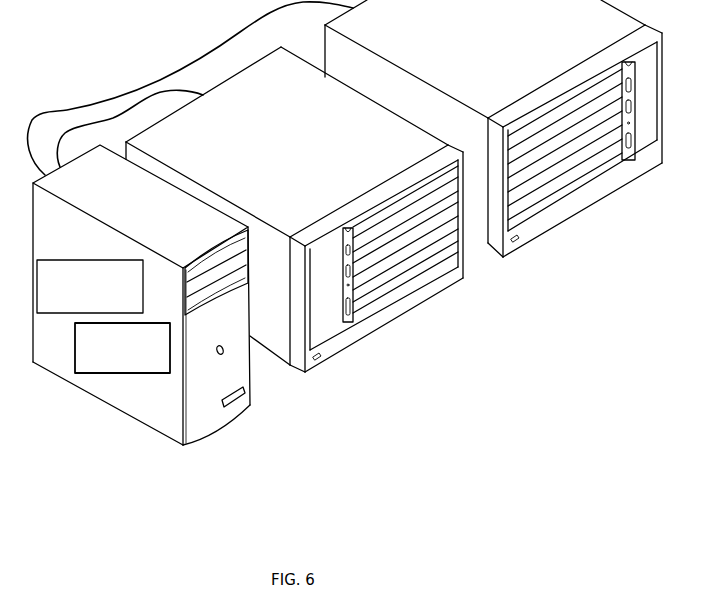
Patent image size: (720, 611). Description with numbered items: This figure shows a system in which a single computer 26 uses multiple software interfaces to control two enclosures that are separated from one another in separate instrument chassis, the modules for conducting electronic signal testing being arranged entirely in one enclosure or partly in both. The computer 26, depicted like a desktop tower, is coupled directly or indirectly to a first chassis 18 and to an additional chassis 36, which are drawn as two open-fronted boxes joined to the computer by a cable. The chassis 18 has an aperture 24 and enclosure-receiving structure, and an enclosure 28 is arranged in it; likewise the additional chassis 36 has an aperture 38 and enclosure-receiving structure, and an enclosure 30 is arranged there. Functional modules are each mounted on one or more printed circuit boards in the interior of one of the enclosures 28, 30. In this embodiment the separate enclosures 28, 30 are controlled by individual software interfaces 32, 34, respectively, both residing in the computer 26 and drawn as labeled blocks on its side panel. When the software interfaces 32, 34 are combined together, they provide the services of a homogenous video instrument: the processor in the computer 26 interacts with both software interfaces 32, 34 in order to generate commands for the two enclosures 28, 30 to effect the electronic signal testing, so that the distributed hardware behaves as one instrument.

The chassis 18 is at (294, 250).
The aperture 24 is at (381, 300).
The computer 26 is at (141, 331).
The enclosure 28 is at (354, 326).
The enclosure 30 is at (624, 161).
The software interface 32 is at (90, 286).
The software interface 34 is at (122, 348).
The additional chassis 36 is at (493, 159).
The aperture 38 is at (539, 170).